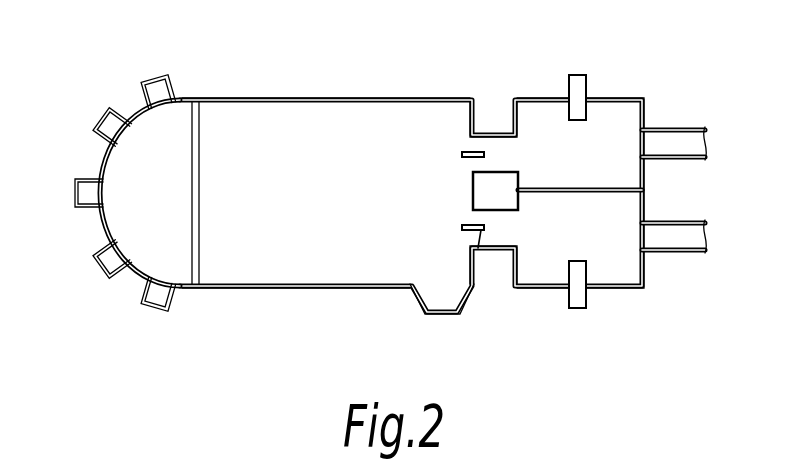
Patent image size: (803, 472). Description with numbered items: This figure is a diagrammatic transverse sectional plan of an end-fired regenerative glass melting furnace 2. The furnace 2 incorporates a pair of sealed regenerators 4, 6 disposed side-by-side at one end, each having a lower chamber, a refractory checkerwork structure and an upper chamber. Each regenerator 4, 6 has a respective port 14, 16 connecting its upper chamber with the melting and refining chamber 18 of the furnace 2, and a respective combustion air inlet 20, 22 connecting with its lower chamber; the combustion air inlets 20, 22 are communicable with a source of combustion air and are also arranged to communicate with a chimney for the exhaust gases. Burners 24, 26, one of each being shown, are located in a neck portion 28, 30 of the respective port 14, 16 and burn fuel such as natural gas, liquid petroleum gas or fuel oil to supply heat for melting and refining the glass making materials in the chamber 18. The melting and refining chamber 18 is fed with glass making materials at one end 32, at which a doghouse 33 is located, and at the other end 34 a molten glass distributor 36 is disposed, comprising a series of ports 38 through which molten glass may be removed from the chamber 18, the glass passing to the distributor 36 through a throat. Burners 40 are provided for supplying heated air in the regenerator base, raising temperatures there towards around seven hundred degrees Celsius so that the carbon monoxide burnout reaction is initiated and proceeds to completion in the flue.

The regenerative glass melting furnace 2 is at (403, 304).
The regenerator 4 is at (603, 288).
The regenerator 6 is at (605, 96).
The port 14 is at (498, 242).
The port 16 is at (496, 148).
The melting and refining chamber 18 is at (270, 289).
The combustion air inlet 20 is at (675, 250).
The combustion air inlet 22 is at (675, 128).
The burner 24 is at (480, 248).
The burner 26 is at (465, 152).
The neck portion 28 is at (467, 240).
The neck portion 30 is at (463, 150).
The end 32 is at (463, 188).
The doghouse 33 is at (425, 312).
The end 34 is at (198, 145).
The molten glass distributor 36 is at (160, 248).
The ports 38 is at (110, 112).
The burner 40 is at (580, 75).